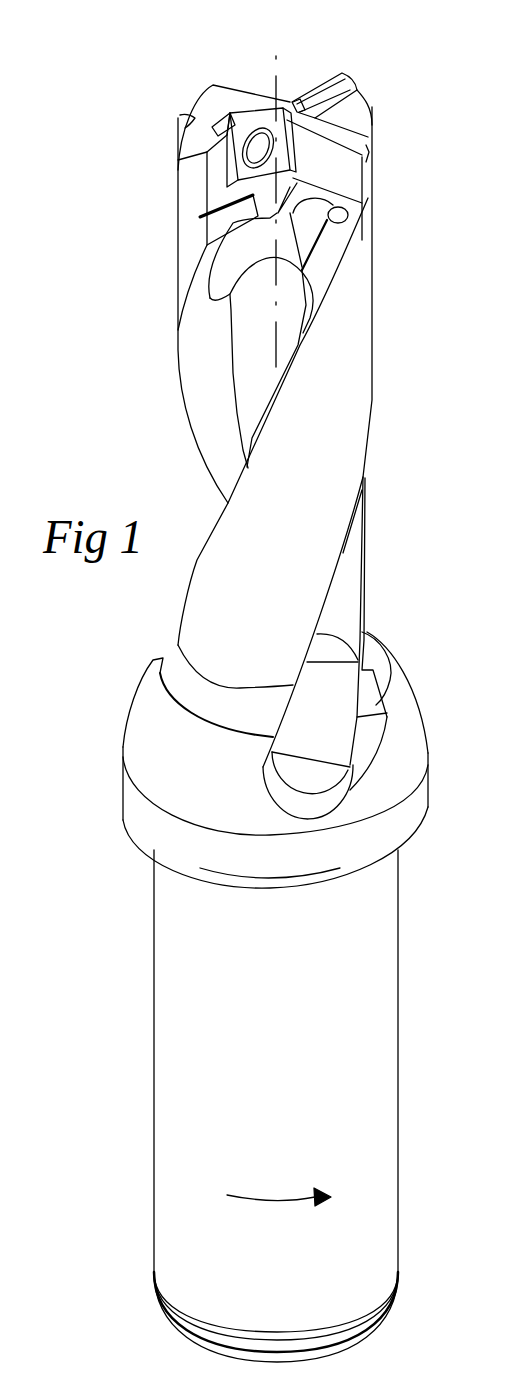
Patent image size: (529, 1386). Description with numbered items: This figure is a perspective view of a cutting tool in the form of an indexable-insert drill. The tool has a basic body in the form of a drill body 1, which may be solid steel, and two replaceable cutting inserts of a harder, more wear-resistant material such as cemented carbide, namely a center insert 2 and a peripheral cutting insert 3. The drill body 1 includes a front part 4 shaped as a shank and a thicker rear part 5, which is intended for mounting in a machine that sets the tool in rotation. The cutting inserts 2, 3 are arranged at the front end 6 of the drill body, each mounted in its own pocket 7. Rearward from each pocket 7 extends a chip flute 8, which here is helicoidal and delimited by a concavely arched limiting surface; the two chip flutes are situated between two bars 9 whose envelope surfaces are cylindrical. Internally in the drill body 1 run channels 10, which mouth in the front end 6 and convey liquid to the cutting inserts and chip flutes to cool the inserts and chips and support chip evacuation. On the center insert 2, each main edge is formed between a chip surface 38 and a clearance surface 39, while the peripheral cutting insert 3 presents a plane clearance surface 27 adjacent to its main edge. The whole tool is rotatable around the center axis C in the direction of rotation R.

The drill body 1 is at (402, 632).
The center insert 2 is at (228, 112).
The peripheral cutting insert 3 is at (358, 77).
The front part 4 is at (372, 358).
The rear part 5 is at (152, 948).
The front end 6 is at (383, 105).
The pocket 7 is at (370, 118).
The chip flute 8 is at (243, 353).
The bar 9 is at (350, 560).
The channel 10 is at (347, 211).
The clearance surface 27 is at (327, 85).
The chip surface 38 is at (205, 215).
The clearance surface 39 is at (262, 112).
The center axis C is at (283, 56).
The direction of rotation R is at (279, 1215).